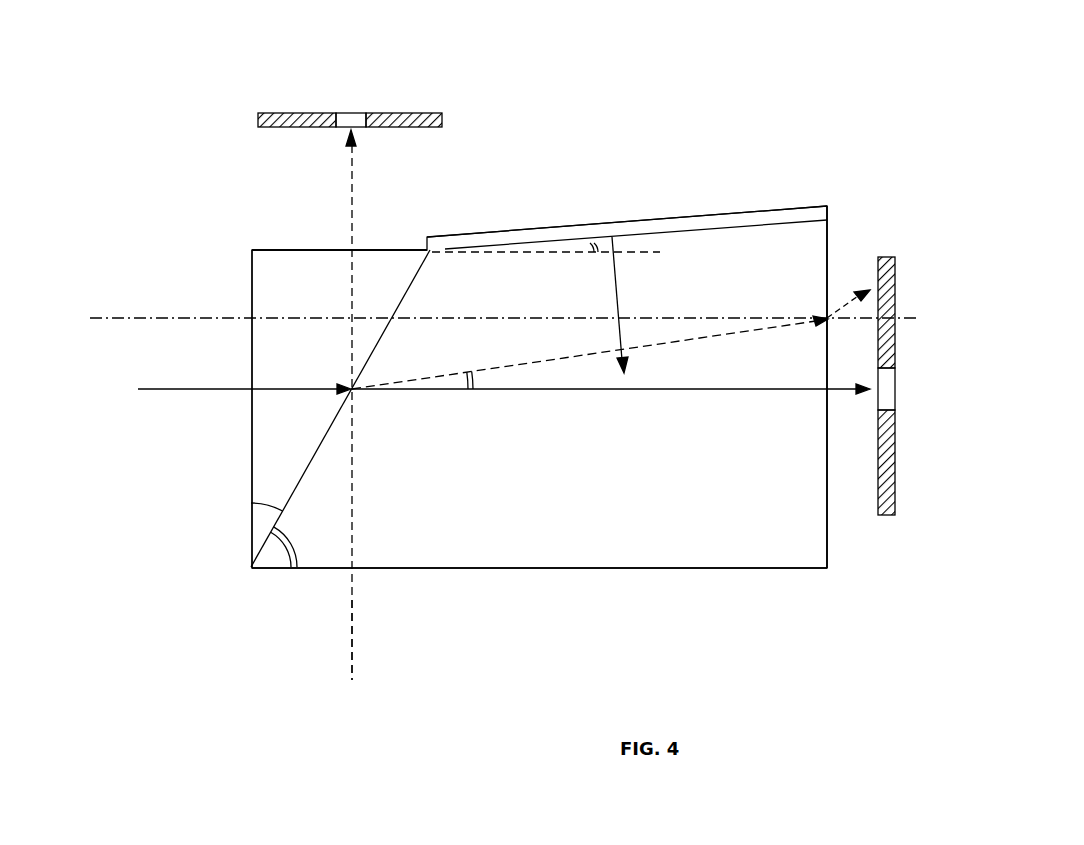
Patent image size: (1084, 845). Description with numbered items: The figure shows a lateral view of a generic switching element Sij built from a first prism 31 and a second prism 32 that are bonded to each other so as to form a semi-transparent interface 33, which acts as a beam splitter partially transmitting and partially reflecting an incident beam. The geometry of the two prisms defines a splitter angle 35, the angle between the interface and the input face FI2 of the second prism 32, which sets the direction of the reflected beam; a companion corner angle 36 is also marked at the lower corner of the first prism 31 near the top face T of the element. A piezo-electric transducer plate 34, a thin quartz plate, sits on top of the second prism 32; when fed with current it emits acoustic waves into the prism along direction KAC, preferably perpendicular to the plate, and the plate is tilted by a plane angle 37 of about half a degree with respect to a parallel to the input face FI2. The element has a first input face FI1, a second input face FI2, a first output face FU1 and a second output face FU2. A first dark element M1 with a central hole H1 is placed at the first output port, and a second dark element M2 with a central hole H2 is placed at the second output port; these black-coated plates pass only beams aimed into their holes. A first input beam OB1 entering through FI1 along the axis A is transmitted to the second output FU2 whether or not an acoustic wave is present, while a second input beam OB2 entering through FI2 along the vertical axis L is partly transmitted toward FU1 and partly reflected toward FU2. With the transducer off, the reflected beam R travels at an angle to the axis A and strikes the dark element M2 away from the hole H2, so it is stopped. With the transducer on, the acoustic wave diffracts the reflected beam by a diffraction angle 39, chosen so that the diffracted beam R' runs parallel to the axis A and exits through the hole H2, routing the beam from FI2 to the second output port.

The first prism 31 is at (283, 372).
The second prism 32 is at (794, 535).
The semi-transparent interface 33 is at (395, 307).
The piezo-electric transducer plate 34 is at (552, 232).
The splitter angle 35 is at (278, 555).
The angle at corner 36 is at (263, 515).
The plane angle 37 is at (583, 247).
The diffraction angle 39 is at (458, 383).
The axis A is at (117, 318).
The top face T is at (352, 276).
The length of the piezo-electric transducer L is at (353, 515).
The reflected beam R is at (611, 332).
The diffracted optical beam R' is at (611, 440).
The acoustic wave propagation direction KAC is at (618, 290).
The first output face FU1 is at (273, 250).
The second output face FU2 is at (827, 392).
The first input face FI1 is at (252, 408).
The second input face FI2 is at (370, 568).
The first input beam OB1 is at (157, 388).
The second input beam OB2 is at (350, 653).
The first dark element M1 is at (323, 113).
The central hole of the first dark element H1 is at (358, 113).
The second dark element M2 is at (895, 452).
The central hole of the second dark element H2 is at (885, 377).
The switching element Sij is at (780, 156).